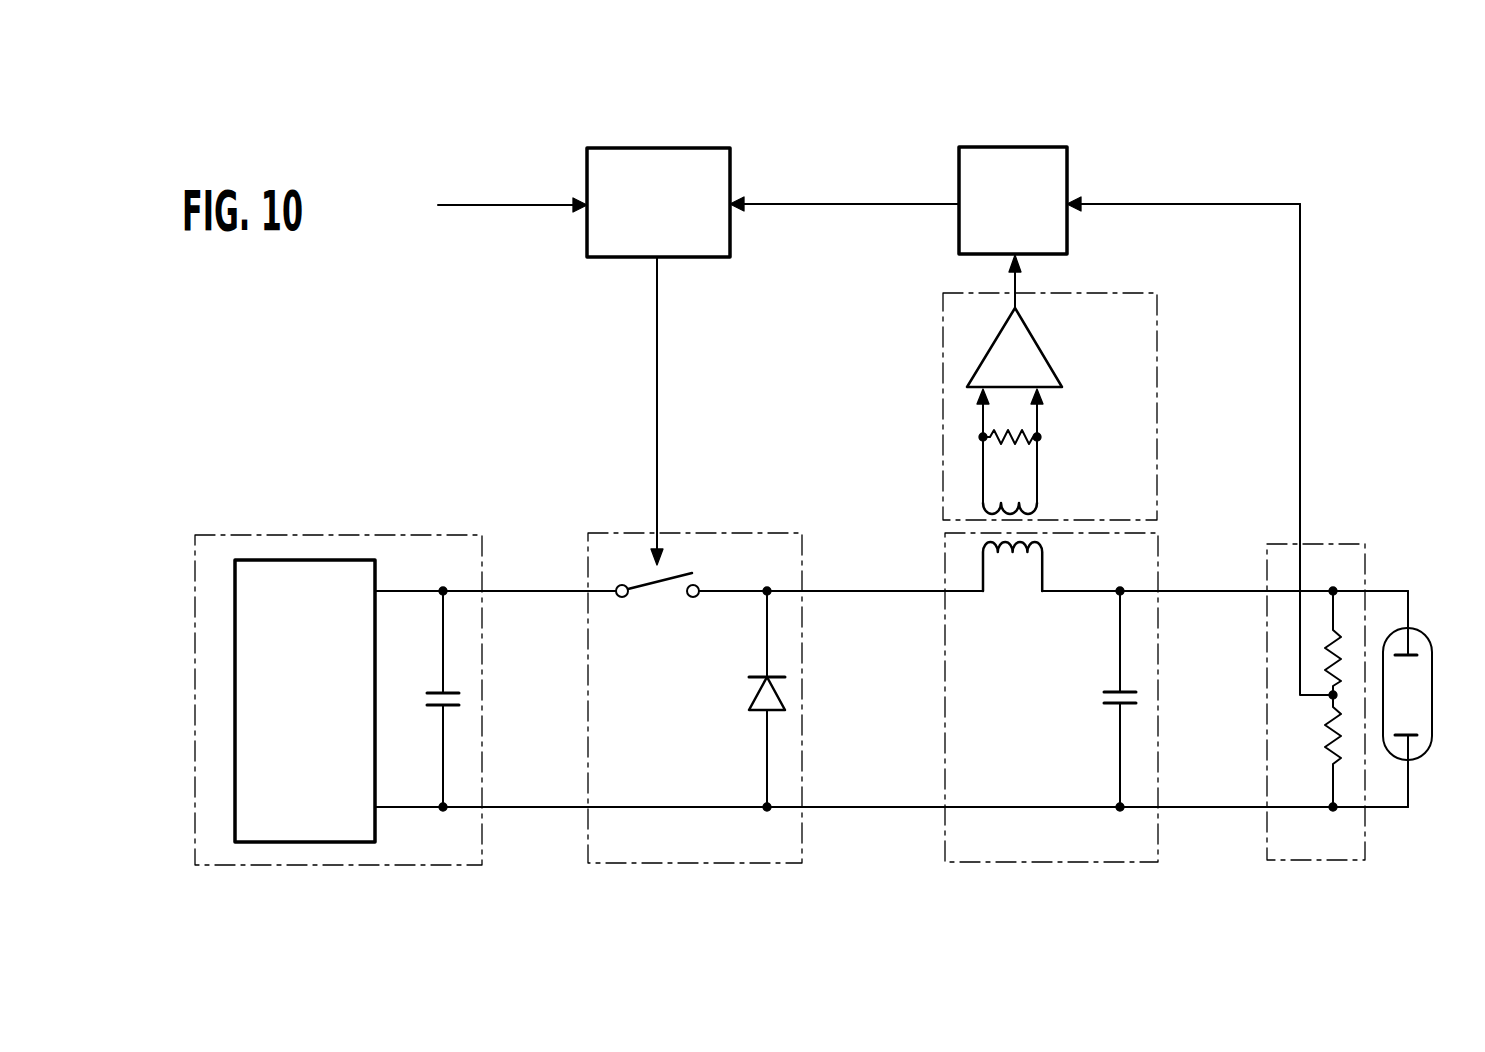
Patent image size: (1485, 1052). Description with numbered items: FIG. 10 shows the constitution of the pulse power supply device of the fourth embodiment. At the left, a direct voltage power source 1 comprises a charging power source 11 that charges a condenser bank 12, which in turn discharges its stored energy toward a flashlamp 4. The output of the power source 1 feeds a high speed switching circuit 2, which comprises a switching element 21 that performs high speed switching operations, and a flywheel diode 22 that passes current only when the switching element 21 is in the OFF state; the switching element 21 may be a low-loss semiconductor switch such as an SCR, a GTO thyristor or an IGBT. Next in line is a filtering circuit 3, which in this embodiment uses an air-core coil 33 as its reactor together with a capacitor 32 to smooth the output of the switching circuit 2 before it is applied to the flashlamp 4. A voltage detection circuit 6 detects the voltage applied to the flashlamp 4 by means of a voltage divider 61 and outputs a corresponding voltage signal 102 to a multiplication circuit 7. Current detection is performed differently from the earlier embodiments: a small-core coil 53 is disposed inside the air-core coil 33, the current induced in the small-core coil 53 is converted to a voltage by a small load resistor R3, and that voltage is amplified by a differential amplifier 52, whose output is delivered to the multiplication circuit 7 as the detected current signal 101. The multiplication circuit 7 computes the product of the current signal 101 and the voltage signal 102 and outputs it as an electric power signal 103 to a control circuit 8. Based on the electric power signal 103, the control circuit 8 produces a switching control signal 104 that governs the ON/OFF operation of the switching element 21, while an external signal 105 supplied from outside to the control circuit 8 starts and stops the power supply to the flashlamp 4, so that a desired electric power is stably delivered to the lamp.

The direct voltage power source 1 is at (393, 865).
The charging power source 11 is at (235, 718).
The condenser bank 12 is at (437, 708).
The high speed switching circuit 2 is at (718, 863).
The switching element 21 is at (660, 593).
The flywheel diode 22 is at (752, 690).
The filtering circuit 3 is at (1085, 862).
The capacitor 32 is at (1112, 705).
The air-core coil 33 is at (993, 568).
The flashlamp 4 is at (1432, 660).
The voltage detection circuit 6 is at (1345, 860).
The voltage divider 61 is at (1333, 695).
The multiplication circuit 7 is at (998, 147).
The control circuit 8 is at (732, 148).
The differential amplifier 52 is at (985, 350).
The small-core coil 53 is at (983, 502).
The small load resistor R3 is at (1015, 437).
The current signal 101 is at (1015, 283).
The voltage signal 102 is at (1202, 204).
The electric power signal 103 is at (843, 204).
The switching control signal 104 is at (658, 335).
The external signal 105 is at (507, 205).